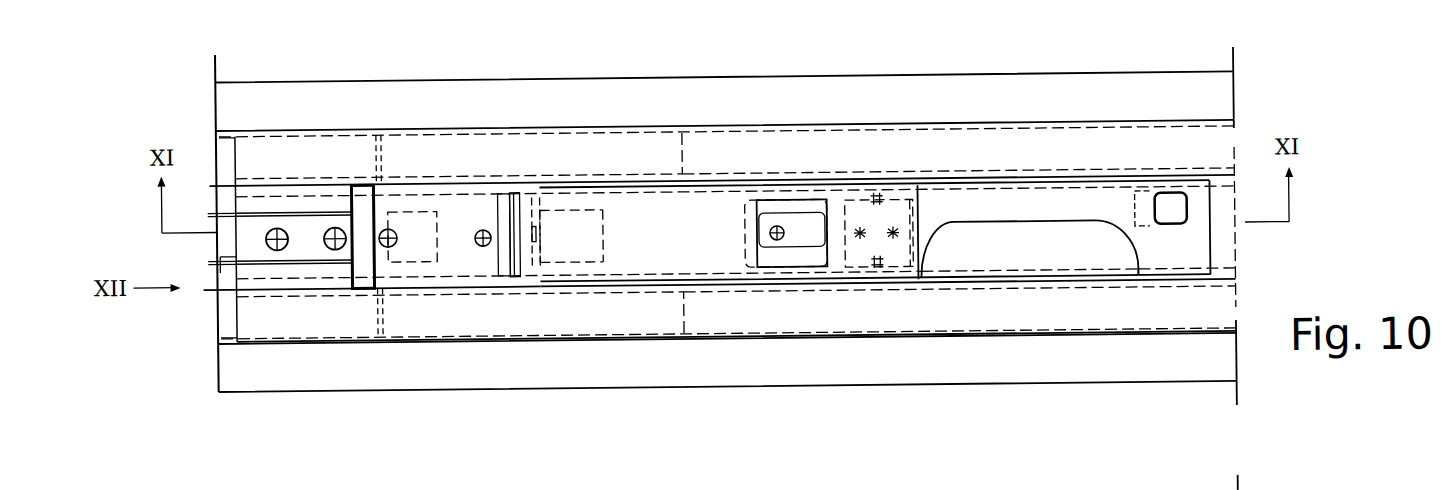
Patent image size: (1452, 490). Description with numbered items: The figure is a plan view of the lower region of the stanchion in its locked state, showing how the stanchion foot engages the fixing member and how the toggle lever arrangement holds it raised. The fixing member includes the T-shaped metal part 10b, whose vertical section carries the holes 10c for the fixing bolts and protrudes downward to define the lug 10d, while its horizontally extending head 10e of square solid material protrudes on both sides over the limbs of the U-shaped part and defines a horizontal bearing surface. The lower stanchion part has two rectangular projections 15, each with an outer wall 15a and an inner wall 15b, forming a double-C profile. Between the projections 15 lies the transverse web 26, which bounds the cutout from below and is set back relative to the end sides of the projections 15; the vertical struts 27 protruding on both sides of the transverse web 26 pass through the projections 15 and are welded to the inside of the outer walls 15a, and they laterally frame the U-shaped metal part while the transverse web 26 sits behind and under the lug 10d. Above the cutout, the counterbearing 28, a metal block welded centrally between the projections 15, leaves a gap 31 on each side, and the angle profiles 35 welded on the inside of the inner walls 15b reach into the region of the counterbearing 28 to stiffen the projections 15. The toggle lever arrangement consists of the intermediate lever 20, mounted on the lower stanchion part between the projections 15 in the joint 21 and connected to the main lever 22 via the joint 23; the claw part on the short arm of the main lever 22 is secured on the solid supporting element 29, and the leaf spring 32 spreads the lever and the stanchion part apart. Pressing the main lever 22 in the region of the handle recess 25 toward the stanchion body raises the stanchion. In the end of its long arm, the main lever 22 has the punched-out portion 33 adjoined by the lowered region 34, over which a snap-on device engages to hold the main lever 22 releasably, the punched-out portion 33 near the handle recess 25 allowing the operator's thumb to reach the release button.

The T-shaped metal part 10b is at (309, 248).
The holes 10c is at (217, 240).
The lug 10d is at (210, 489).
The head 10e is at (365, 207).
The rectangular projections 15 is at (956, 320).
The outer wall 15a is at (706, 338).
The inner walls 15b is at (736, 294).
The intermediate lever 20 is at (920, 201).
The joint 21 is at (885, 489).
The main lever 22 is at (1007, 221).
The joint 23 is at (519, 280).
The handle recess 25 is at (1070, 489).
The transverse web 26 is at (170, 489).
The struts 27 is at (241, 262).
The counterbearing 28 is at (562, 209).
The supporting element 29 is at (457, 240).
The gap 31 is at (599, 272).
The leaf spring 32 is at (832, 489).
The punched-out portion 33 is at (1175, 220).
The lowered region 34 is at (1144, 489).
The angle profiles 35 is at (584, 317).